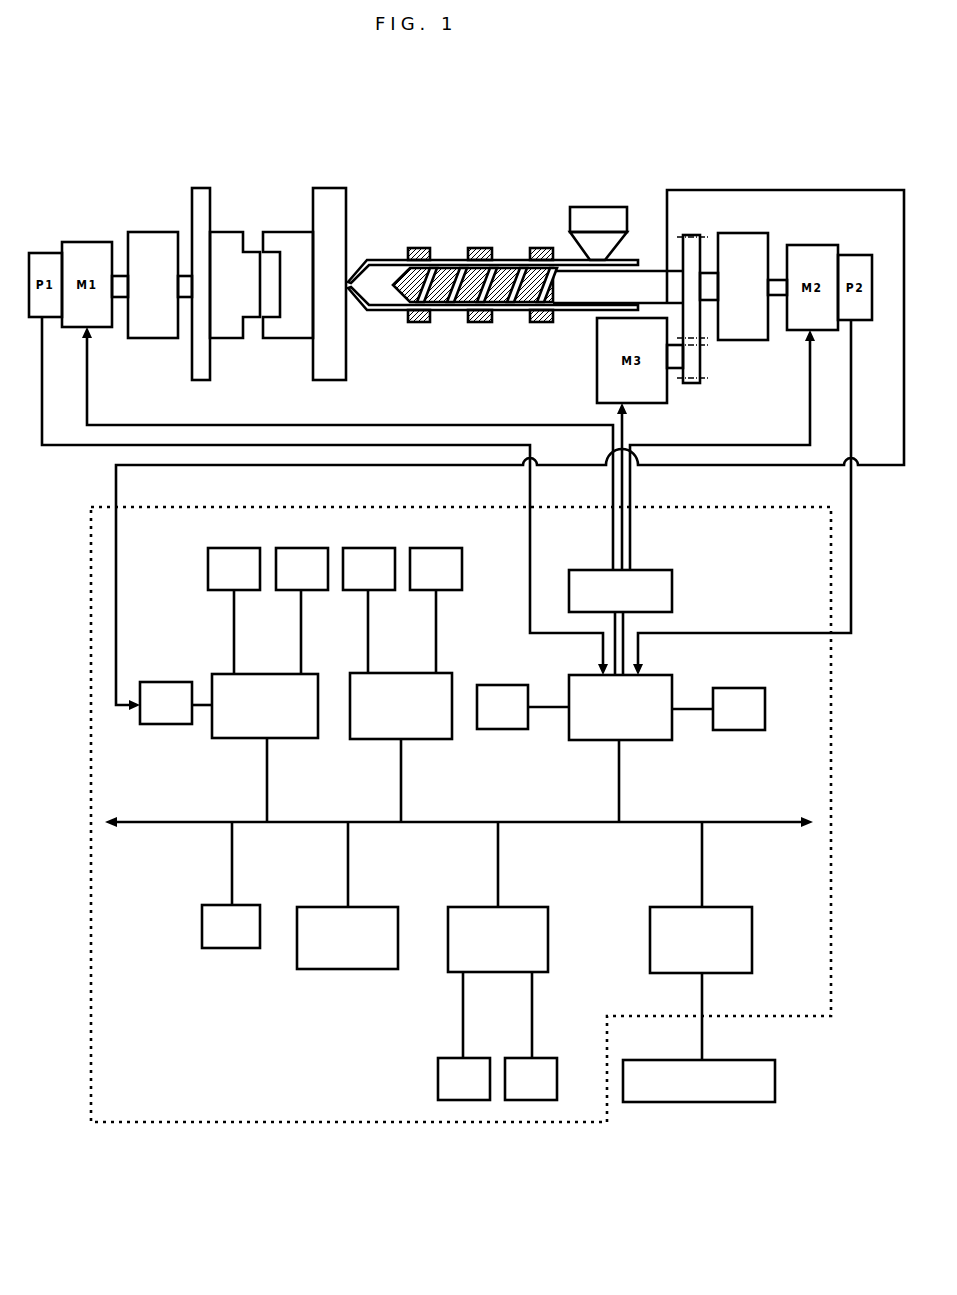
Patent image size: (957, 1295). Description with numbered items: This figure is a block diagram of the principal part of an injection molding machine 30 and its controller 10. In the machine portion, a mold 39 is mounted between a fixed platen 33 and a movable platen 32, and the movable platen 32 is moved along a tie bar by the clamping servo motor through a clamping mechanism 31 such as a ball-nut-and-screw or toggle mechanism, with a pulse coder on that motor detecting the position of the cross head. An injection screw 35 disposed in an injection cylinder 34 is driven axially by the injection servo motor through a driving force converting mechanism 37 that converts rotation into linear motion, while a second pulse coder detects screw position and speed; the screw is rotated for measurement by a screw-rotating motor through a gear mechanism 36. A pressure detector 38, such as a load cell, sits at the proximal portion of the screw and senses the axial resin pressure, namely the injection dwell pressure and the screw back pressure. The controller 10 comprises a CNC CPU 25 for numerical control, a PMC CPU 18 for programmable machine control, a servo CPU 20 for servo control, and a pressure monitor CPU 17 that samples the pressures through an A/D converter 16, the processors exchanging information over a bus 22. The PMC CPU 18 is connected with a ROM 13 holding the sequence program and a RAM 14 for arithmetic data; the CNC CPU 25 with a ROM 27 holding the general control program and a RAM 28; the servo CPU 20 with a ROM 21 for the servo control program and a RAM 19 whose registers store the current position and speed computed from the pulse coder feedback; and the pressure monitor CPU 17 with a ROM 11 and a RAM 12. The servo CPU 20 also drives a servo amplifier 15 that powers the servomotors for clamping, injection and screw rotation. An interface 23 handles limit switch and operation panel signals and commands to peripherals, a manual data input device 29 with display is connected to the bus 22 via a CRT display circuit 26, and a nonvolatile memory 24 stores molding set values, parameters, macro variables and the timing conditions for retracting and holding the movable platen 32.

The controller 10 is at (768, 507).
The ROM 11 is at (245, 548).
The RAM 12 is at (313, 548).
The ROM 13 is at (380, 548).
The RAM 14 is at (447, 548).
The servo amplifier 15 is at (672, 572).
The A/D converter 16 is at (180, 682).
The pressure monitor CPU 17 is at (312, 674).
The PMC CPU 18 is at (447, 673).
The RAM 19 is at (515, 685).
The servo CPU 20 is at (672, 676).
The ROM 21 is at (752, 688).
The bus 22 is at (750, 822).
The interface 23 is at (262, 905).
The nonvolatile memory 24 is at (398, 907).
The CNC CPU 25 is at (548, 907).
The CRT display circuit 26 is at (752, 907).
The ROM 27 is at (478, 1058).
The RAM 28 is at (545, 1058).
The manual data input device 29 is at (765, 1060).
The injection molding machine 30 is at (648, 171).
The clamping mechanism 31 is at (128, 232).
The movable platen 32 is at (194, 189).
The fixed platen 33 is at (313, 189).
The injection cylinder 34 is at (384, 259).
The injection screw 35 is at (605, 297).
The gear mechanism 36 is at (702, 362).
The driving force converting mechanism 37 is at (733, 233).
The pressure detector 38 is at (677, 277).
The mold 39 is at (284, 232).